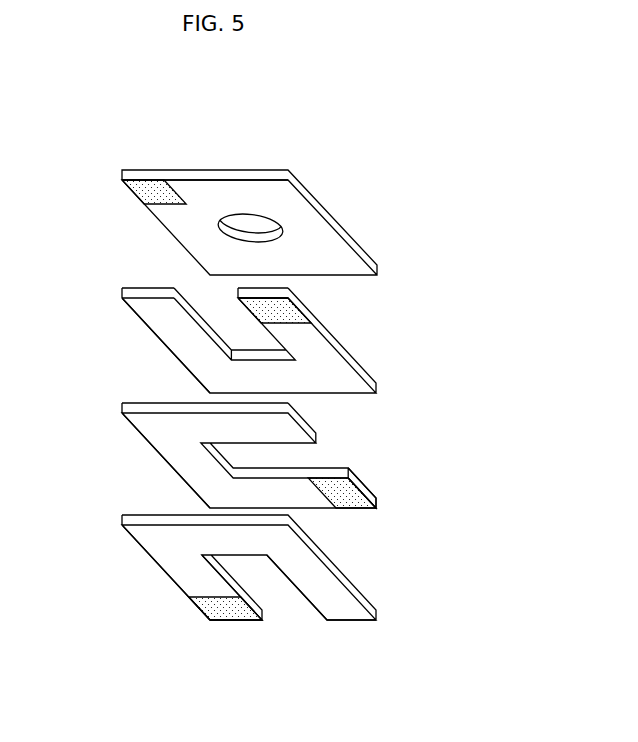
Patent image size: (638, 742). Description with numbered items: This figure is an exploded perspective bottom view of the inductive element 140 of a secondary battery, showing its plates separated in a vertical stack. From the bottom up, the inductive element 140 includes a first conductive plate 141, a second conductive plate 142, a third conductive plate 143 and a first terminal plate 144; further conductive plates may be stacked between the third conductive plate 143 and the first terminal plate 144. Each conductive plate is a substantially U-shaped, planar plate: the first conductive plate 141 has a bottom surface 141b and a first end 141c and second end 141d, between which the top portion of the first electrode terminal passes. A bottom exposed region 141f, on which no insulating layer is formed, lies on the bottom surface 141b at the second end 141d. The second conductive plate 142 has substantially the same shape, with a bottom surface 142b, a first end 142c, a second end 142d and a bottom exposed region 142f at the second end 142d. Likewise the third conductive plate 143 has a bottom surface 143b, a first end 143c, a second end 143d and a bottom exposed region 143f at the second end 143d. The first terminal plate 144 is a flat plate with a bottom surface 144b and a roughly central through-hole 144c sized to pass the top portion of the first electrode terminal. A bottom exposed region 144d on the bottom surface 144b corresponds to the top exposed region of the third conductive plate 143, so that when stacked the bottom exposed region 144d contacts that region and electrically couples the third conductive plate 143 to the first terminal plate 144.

The inductive element 140 is at (368, 107).
The first conductive plate 141 is at (388, 587).
The bottom surface 141b is at (175, 567).
The first end 141c is at (350, 622).
The second end 141d is at (248, 622).
The bottom exposed region 141f is at (215, 612).
The second conductive plate 142 is at (386, 442).
The bottom surface 142b is at (170, 450).
The first end 142c is at (308, 423).
The second end 142d is at (366, 483).
The bottom exposed region 142f is at (348, 504).
The third conductive plate 143 is at (386, 362).
The bottom surface 143b is at (180, 351).
The first end 143c is at (140, 288).
The second end 143d is at (274, 288).
The bottom exposed region 143f is at (290, 318).
The first terminal plate 144 is at (174, 153).
The bottom surface 144b is at (235, 192).
The through-hole 144c is at (240, 236).
The bottom exposed region 144d is at (140, 196).